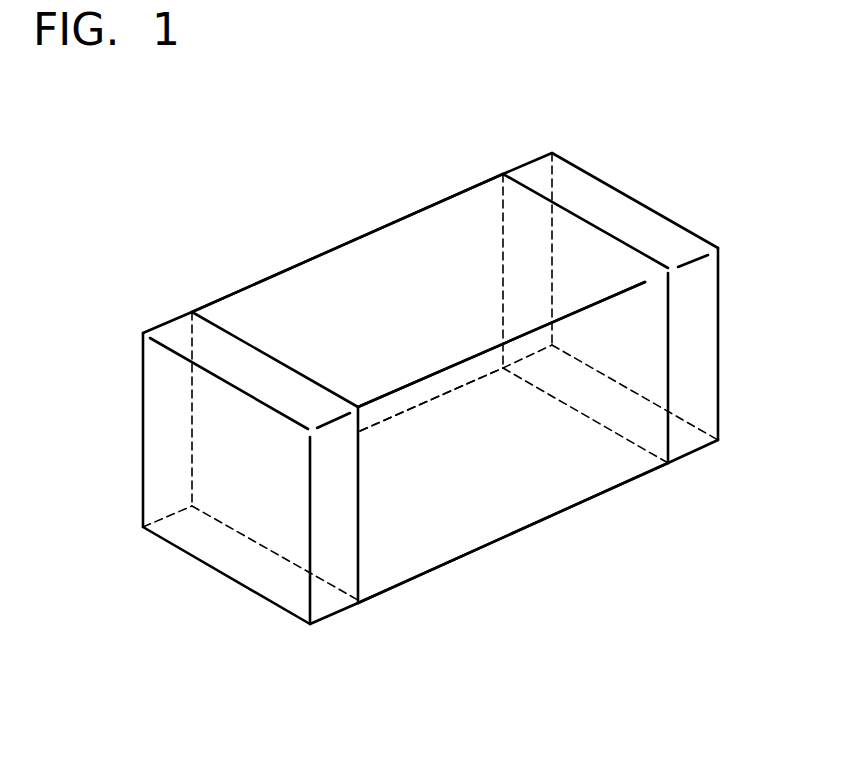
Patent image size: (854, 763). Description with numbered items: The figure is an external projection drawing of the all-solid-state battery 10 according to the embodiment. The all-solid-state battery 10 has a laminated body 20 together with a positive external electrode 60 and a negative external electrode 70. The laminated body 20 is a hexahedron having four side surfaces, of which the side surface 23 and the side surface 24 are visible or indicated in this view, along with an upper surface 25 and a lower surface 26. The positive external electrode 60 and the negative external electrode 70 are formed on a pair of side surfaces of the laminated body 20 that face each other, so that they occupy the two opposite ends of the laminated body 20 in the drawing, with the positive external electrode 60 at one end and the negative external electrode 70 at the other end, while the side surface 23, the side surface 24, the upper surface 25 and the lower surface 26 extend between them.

The all-solid-state battery 10 is at (586, 120).
The laminated body 20 is at (377, 232).
The side surface 23 is at (563, 447).
The side surface 24 is at (373, 323).
The upper surface 25 is at (462, 238).
The lower surface 26 is at (447, 472).
The positive external electrode 60 is at (180, 340).
The negative external electrode 70 is at (616, 213).